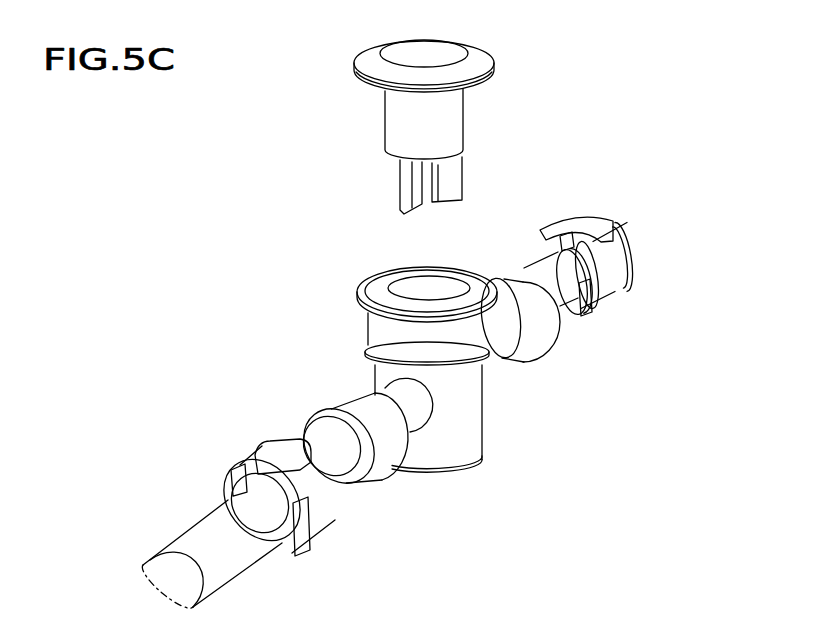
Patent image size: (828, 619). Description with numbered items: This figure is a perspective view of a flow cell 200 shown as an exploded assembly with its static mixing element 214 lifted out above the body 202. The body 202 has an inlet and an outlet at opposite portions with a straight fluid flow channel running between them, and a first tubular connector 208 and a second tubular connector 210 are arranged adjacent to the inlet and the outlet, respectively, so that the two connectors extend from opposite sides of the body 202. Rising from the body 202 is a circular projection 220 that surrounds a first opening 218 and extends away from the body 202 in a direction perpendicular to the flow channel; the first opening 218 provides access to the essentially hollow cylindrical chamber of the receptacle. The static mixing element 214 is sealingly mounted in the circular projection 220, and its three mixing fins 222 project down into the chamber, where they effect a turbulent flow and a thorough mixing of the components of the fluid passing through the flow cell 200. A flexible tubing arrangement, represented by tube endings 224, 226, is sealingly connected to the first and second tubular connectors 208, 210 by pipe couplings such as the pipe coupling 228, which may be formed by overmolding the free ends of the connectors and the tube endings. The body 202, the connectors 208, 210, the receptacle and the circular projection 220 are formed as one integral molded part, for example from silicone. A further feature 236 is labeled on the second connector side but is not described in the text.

The flow cell 200 is at (406, 310).
The body 202 is at (494, 486).
The first tubular connector 208 is at (408, 415).
The second tubular connector 210 is at (490, 370).
The static mixing element 214 is at (504, 37).
The first opening 218 is at (395, 278).
The circular projection 220 is at (368, 330).
The mixing fins 222 is at (412, 192).
The tube ending 224 is at (156, 518).
The tube ending 226 is at (643, 304).
The pipe coupling 228 is at (322, 406).
The ring 236 is at (540, 358).